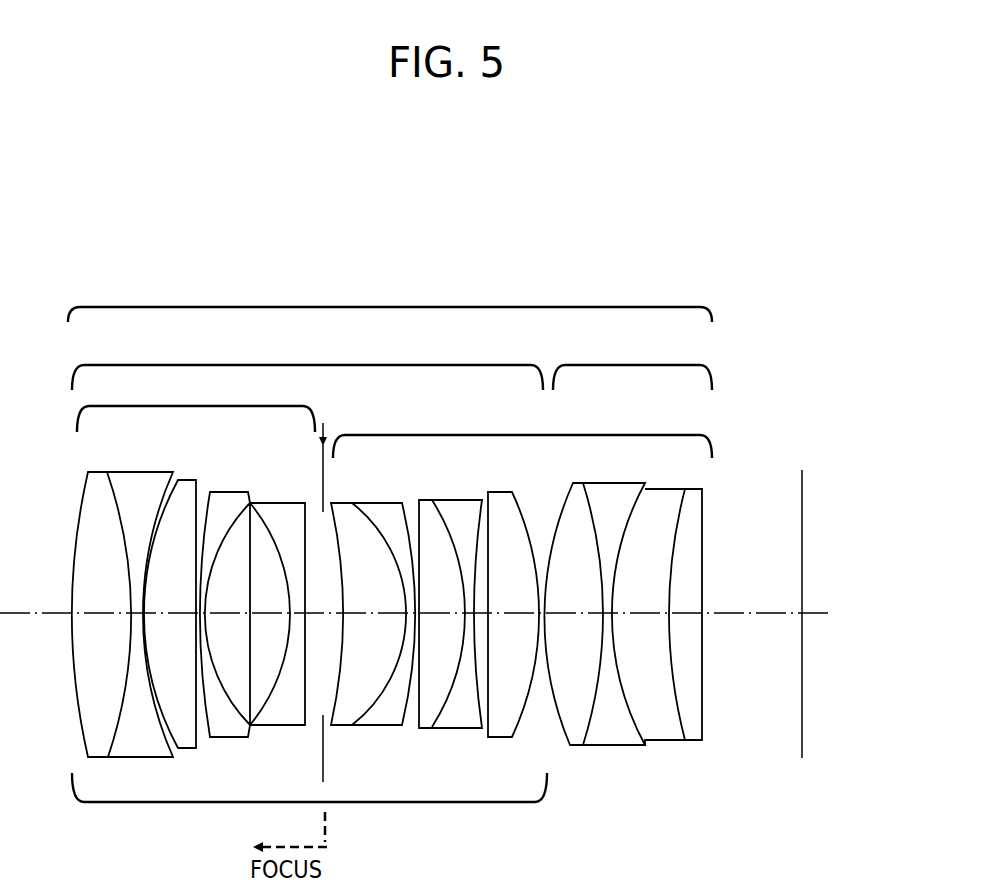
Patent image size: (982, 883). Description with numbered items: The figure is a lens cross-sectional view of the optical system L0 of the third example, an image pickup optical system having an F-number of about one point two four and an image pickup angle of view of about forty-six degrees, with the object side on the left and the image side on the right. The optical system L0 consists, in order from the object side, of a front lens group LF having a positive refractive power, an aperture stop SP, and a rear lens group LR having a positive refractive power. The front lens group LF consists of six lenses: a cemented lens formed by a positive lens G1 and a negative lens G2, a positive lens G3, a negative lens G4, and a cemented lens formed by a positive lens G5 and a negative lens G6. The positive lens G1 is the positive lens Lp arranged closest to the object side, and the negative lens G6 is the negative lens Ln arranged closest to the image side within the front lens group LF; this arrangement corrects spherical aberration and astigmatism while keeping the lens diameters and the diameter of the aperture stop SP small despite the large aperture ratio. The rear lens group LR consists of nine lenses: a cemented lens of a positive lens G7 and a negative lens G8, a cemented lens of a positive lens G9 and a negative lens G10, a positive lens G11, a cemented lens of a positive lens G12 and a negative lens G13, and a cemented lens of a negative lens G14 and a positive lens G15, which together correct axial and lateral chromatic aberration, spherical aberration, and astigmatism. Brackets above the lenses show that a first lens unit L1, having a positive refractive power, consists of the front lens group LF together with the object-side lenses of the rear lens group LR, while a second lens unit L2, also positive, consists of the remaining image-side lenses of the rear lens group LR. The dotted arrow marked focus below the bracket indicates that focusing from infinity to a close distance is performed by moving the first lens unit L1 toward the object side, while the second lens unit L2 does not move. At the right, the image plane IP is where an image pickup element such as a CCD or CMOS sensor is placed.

The positive lens G1 is at (97, 492).
The negative lens G2 is at (148, 483).
The positive lens G3 is at (188, 490).
The negative lens G4 is at (233, 502).
The positive lens G5 is at (260, 515).
The negative lens G6 is at (284, 518).
The positive lens G7 is at (345, 512).
The negative lens G8 is at (378, 510).
The positive lens G9 is at (427, 510).
The negative lens G10 is at (459, 512).
The positive lens G11 is at (503, 500).
The positive lens G12 is at (575, 495).
The negative lens G13 is at (613, 497).
The negative lens G14 is at (658, 495).
The positive lens G15 is at (697, 502).
The optical system L0 is at (390, 300).
The first lens unit L1 is at (307, 361).
The second lens unit L2 is at (632, 361).
The front lens group LF is at (196, 404).
The rear lens group LR is at (522, 434).
The positive lens Lp is at (101, 584).
The negative lens Ln is at (277, 579).
The aperture stop SP is at (333, 589).
The image plane IP is at (812, 536).